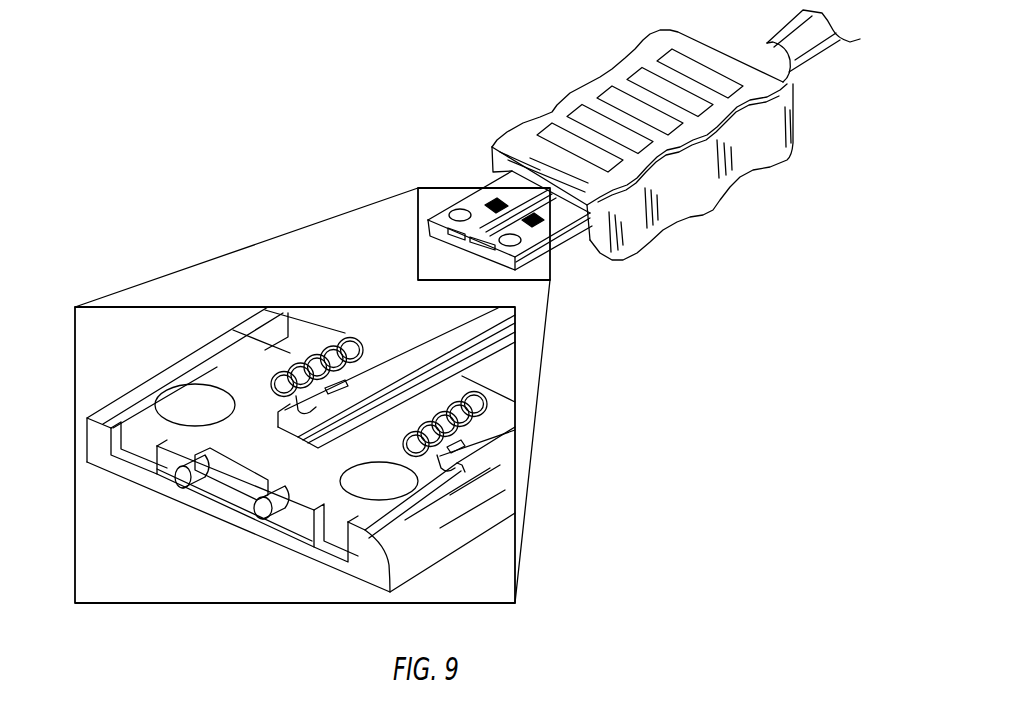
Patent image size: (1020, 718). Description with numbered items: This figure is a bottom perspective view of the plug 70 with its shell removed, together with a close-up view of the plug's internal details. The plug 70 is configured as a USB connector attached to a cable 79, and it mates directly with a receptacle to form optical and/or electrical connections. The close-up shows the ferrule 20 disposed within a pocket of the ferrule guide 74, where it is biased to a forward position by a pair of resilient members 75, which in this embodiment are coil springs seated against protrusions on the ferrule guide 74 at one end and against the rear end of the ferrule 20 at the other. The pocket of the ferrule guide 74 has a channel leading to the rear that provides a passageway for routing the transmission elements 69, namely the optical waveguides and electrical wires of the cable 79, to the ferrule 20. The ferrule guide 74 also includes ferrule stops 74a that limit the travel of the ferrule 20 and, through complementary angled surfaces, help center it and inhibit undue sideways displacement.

The plug 70 is at (712, 220).
The cable 79 is at (797, 52).
The ferrule guide 74 is at (443, 535).
The ferrule stops 74a is at (142, 453).
The second ferrule 20 is at (465, 472).
The transmission elements 69 is at (500, 345).
The resilient members 75 is at (283, 393).